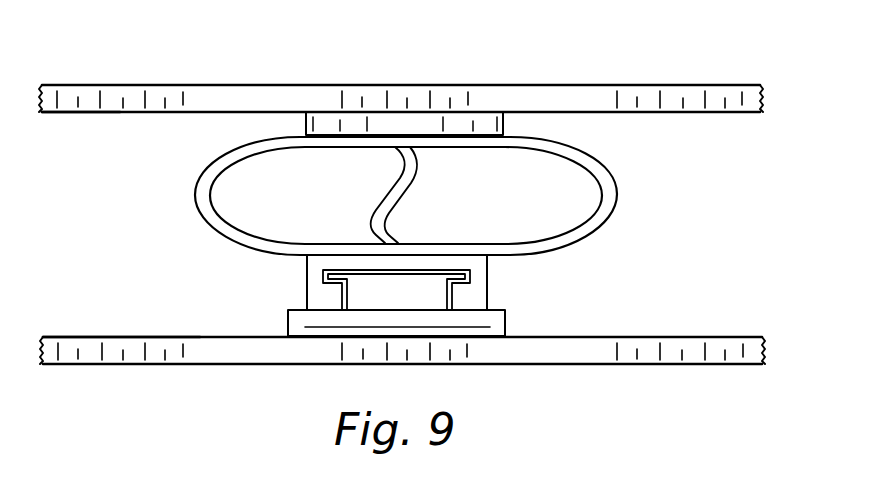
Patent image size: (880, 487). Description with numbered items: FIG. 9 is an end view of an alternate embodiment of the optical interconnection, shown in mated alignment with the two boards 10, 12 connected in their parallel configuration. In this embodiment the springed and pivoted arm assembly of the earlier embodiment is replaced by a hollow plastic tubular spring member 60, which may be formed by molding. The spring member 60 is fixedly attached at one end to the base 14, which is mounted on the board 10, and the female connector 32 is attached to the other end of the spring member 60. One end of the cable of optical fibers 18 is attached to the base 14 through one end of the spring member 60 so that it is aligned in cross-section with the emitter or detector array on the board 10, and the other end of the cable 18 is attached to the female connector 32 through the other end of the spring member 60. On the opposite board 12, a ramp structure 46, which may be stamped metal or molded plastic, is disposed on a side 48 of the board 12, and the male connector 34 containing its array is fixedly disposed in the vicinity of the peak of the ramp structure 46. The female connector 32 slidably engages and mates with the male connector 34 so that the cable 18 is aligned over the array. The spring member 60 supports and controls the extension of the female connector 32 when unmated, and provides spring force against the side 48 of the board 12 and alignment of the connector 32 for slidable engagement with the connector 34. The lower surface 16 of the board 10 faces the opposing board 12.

The board 10 is at (700, 85).
The board 12 is at (720, 364).
The base 14 is at (505, 121).
The lower surface of upper plate 16 is at (65, 113).
The cable of optical fibers 18 is at (398, 206).
The female connector 32 is at (304, 293).
The male connector 34 is at (433, 297).
The ramp structure 46 is at (506, 322).
The side of board 48 is at (115, 337).
The tubular spring member 60 is at (194, 200).